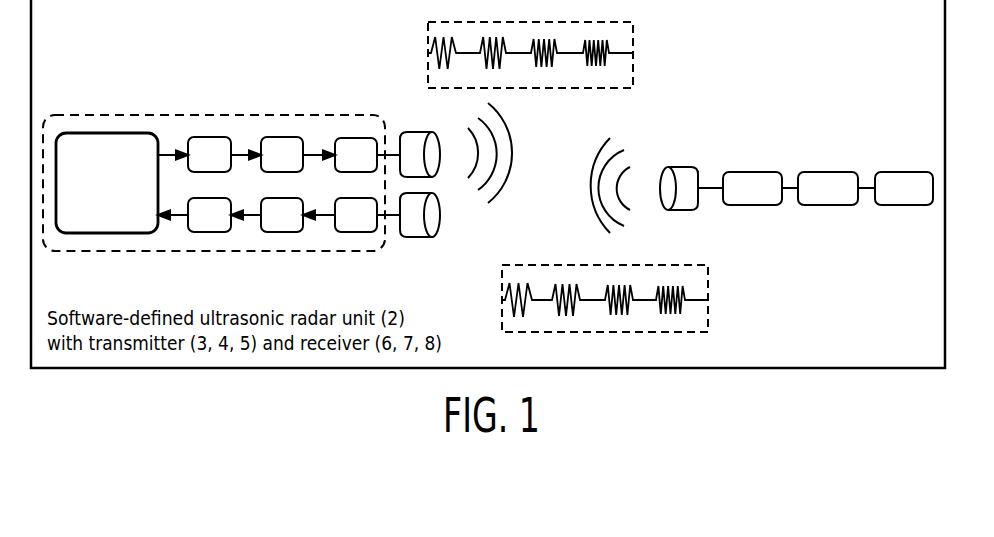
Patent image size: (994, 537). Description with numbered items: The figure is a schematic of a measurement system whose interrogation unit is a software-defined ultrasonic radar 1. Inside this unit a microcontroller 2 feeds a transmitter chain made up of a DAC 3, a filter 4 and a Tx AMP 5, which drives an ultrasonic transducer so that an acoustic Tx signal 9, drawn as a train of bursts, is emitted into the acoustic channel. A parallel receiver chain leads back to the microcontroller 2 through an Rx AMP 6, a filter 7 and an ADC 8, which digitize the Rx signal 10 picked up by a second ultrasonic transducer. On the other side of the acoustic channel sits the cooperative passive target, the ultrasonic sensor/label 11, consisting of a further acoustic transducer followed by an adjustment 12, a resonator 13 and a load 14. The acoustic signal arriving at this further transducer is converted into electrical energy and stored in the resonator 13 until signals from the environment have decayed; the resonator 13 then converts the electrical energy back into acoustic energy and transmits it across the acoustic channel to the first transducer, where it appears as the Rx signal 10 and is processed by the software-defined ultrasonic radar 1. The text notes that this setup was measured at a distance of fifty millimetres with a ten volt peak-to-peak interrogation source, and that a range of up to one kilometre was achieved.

The software-defined ultrasonic radar 1 is at (155, 113).
The microcontroller 2 is at (107, 133).
The DAC 3 is at (212, 137).
The filter 4 is at (283, 137).
The Tx AMP 5 is at (355, 138).
The Rx AMP 6 is at (355, 232).
The filter 7 is at (282, 232).
The ADC 8 is at (210, 232).
The Tx signal 9 is at (633, 33).
The Rx signal 10 is at (708, 318).
The ultrasonic sensor/label 11 is at (812, 138).
The adjustment 12 is at (748, 205).
The resonator 13 is at (828, 205).
The load 14 is at (905, 205).